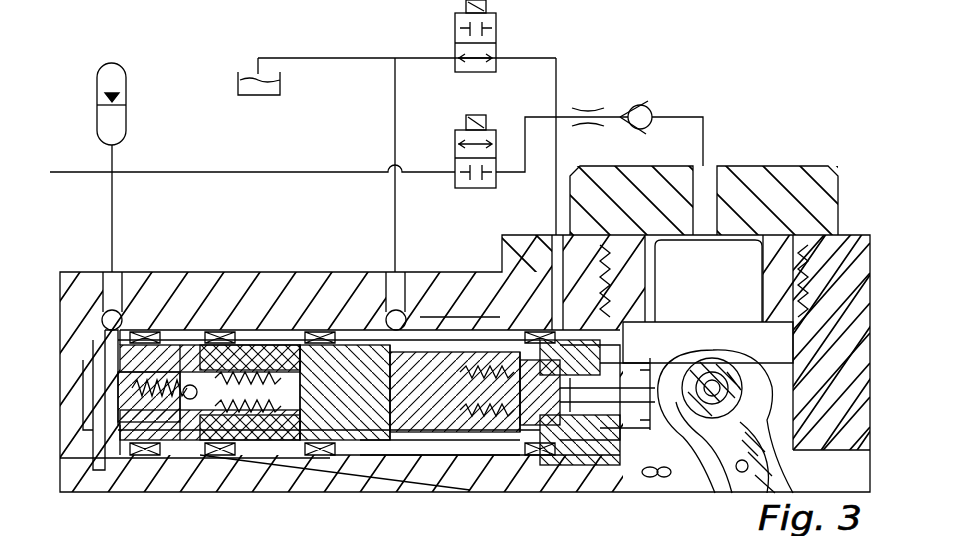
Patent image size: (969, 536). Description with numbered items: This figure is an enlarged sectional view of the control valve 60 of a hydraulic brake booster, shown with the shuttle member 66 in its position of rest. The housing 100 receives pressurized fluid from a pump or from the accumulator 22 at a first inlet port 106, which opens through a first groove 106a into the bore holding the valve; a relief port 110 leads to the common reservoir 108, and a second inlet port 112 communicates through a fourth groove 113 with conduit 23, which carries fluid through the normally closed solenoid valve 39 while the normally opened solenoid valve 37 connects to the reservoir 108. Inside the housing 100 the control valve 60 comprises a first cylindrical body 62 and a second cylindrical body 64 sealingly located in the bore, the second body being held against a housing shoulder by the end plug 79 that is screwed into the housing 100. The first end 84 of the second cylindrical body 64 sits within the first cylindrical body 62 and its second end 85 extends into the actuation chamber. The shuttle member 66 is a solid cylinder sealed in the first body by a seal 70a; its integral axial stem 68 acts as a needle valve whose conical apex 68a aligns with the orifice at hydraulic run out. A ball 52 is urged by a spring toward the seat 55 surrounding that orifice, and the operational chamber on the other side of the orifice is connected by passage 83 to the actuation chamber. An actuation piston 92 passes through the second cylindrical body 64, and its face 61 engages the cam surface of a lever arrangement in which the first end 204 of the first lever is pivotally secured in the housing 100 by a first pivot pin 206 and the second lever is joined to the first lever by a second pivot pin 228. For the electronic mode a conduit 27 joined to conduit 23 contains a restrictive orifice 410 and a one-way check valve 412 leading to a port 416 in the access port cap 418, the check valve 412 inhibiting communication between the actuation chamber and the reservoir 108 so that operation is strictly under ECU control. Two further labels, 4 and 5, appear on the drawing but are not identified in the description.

The valve housing 4 is at (62, 432).
The control piston 5 is at (555, 468).
The accumulator 22 is at (128, 70).
The conduit 23 is at (512, 170).
The conduit 27 is at (703, 114).
The first solenoid valve 37 is at (498, 23).
The second solenoid valve 39 is at (455, 140).
The ball 52 is at (196, 400).
The seat 55 is at (440, 488).
The control valve 60 is at (652, 326).
The second end of actuation piston 61 is at (650, 425).
The first cylindrical body 62 is at (128, 345).
The second cylindrical body 64 is at (522, 326).
The shuttle member 66 is at (350, 340).
The axial stem 68 is at (205, 335).
The apex of conical surface 68a is at (540, 470).
The seal 70a is at (292, 420).
The end plug 79 is at (66, 358).
The passage 83 is at (402, 492).
The first end of second cylindrical body 84 is at (466, 338).
The second end of second cylindrical body 85 is at (630, 345).
The actuation piston 92 is at (610, 450).
The housing 100 is at (72, 270).
The first inlet port 106 is at (113, 268).
The first groove 106a is at (96, 305).
The reservoir 108 is at (282, 86).
The relief port 110 is at (394, 268).
The second inlet port 112 is at (556, 230).
The fourth groove 113 is at (503, 268).
The first end of first lever 204 is at (715, 360).
The first pivot pin 206 is at (735, 380).
The second pivot pin 228 is at (750, 466).
The restrictive orifice 410 is at (588, 106).
The one-way check valve 412 is at (650, 110).
The port 416 is at (704, 162).
The access port cap 418 is at (832, 204).